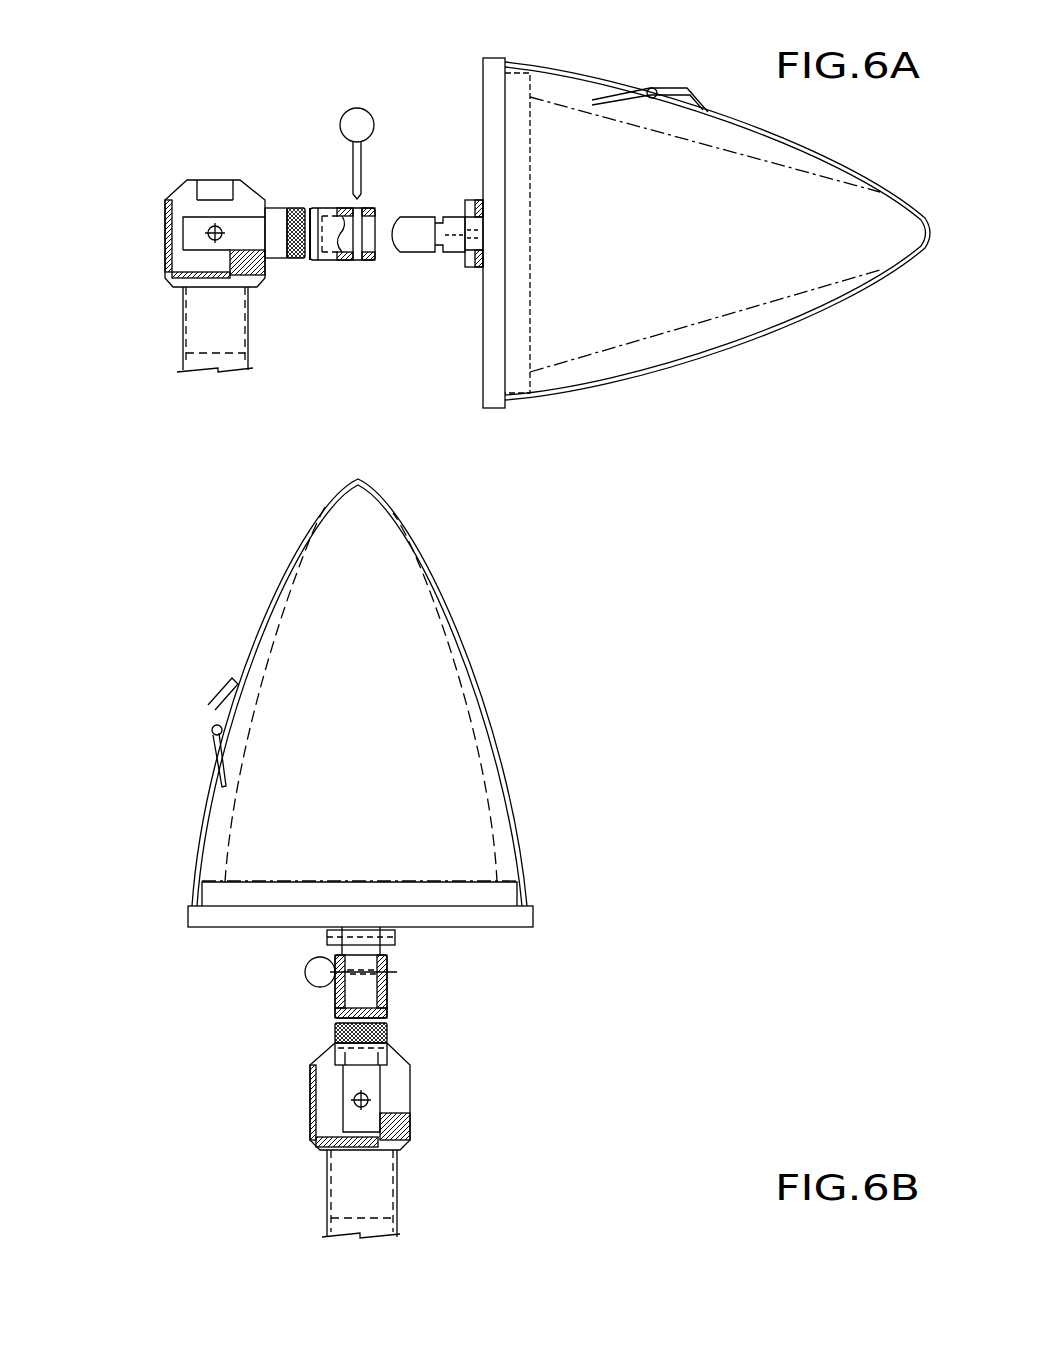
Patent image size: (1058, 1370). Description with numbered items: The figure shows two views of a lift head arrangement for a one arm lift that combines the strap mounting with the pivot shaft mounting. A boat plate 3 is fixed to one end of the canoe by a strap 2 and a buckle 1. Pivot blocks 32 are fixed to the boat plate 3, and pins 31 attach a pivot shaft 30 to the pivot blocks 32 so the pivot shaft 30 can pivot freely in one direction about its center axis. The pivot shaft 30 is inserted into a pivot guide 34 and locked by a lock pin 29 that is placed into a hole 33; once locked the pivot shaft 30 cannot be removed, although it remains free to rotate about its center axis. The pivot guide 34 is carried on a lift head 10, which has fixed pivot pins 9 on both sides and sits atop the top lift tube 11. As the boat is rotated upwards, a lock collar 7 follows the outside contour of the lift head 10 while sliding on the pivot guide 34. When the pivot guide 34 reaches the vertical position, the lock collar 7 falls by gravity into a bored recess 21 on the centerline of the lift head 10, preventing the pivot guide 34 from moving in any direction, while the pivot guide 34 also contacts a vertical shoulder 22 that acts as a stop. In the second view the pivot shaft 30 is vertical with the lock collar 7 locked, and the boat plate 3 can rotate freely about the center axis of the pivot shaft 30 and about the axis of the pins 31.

In FIG. 6B, the buckle 1 is at (213, 705).
In FIG. 6B, the strap 2 is at (513, 817).
In FIG. 6B, the boat plate 3 is at (537, 913).
In FIG. 6A, the lock collar 7 is at (282, 200).
In FIG. 6B, the lock collar 7 is at (387, 1033).
In FIG. 6A, the pivot pin 9 is at (208, 232).
In FIG. 6A, the lift head 10 is at (165, 240).
In FIG. 6B, the lift head 10 is at (313, 1123).
In FIG. 6A, the top lift tube 11 is at (182, 327).
In FIG. 6A, the bored recess 21 is at (203, 187).
In FIG. 6B, the vertical shoulder 22 is at (400, 1130).
In FIG. 6A, the lock pin 29 is at (363, 106).
In FIG. 6B, the lock pin 29 is at (302, 972).
In FIG. 6A, the pivot shaft 30 is at (450, 260).
In FIG. 6A, the pins 31 is at (475, 267).
In FIG. 6B, the pivot blocks 32 is at (397, 947).
In FIG. 6A, the hole 33 is at (357, 260).
In FIG. 6A, the pivot guide 34 is at (320, 260).
In FIG. 6B, the pivot guide 34 is at (330, 1005).